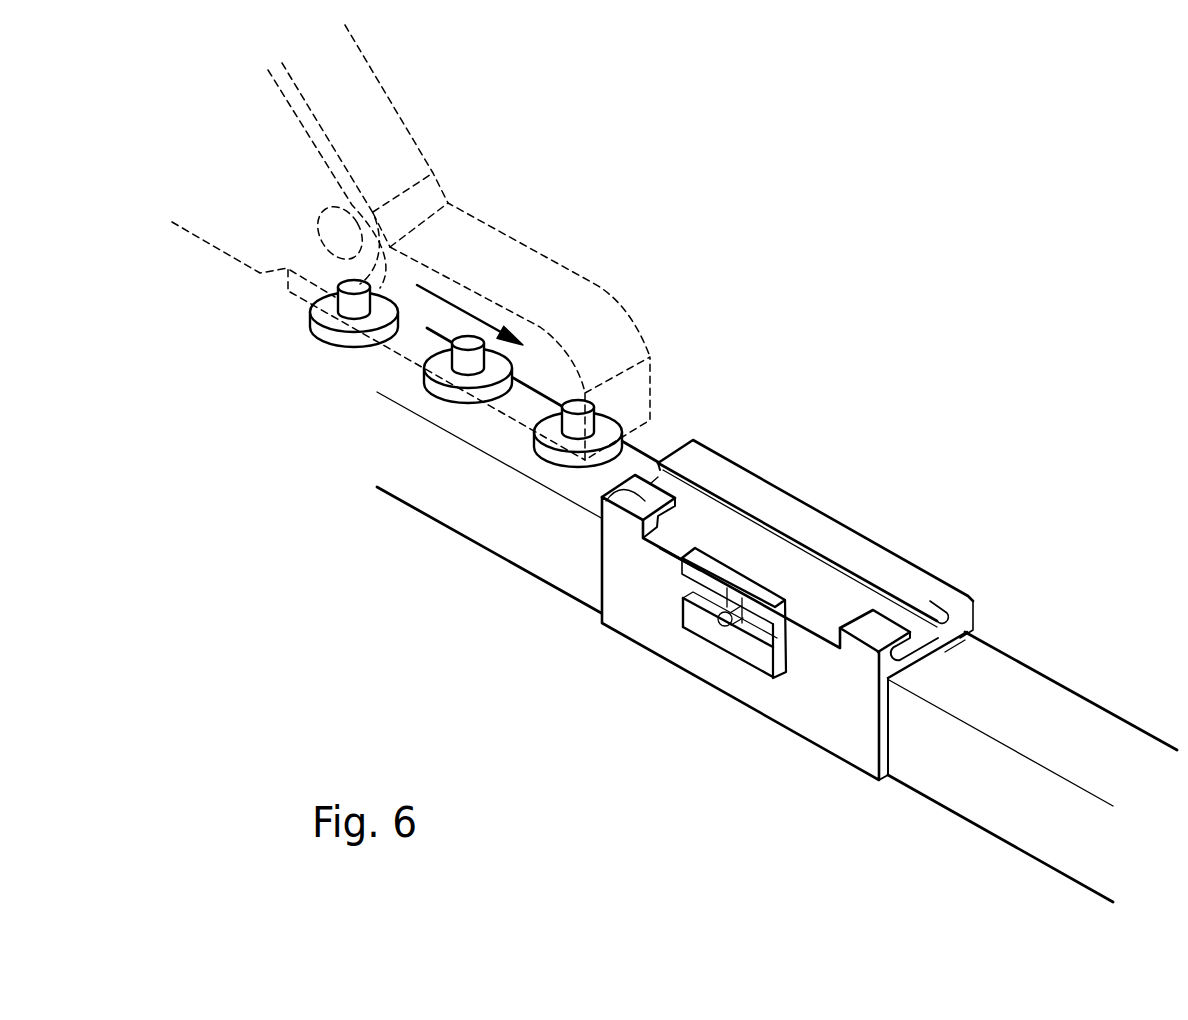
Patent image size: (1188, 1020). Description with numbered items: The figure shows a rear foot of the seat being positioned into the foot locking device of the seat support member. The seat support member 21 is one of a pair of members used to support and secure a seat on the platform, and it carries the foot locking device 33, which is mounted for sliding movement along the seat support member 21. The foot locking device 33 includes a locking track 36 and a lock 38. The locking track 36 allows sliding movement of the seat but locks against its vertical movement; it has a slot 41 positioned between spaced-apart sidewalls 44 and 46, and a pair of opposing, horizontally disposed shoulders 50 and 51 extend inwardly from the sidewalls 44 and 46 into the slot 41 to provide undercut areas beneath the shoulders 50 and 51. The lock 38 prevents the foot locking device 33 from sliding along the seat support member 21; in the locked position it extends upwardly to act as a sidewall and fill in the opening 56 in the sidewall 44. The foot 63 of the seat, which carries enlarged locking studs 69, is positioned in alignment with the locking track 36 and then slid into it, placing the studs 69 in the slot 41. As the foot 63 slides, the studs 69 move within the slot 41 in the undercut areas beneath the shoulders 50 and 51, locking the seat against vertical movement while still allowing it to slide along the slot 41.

The seat support member 21 is at (1105, 742).
The foot locking device 33 is at (850, 728).
The locking track 36 is at (955, 664).
The lock 38 is at (767, 657).
The slot 41 is at (968, 638).
The sidewall 44 is at (635, 523).
The sidewall 46 is at (973, 606).
The shoulder 50 is at (602, 503).
The shoulder 51 is at (884, 567).
The opening 56 is at (680, 538).
The foot 63 is at (523, 288).
The locking stud 69 is at (310, 327).